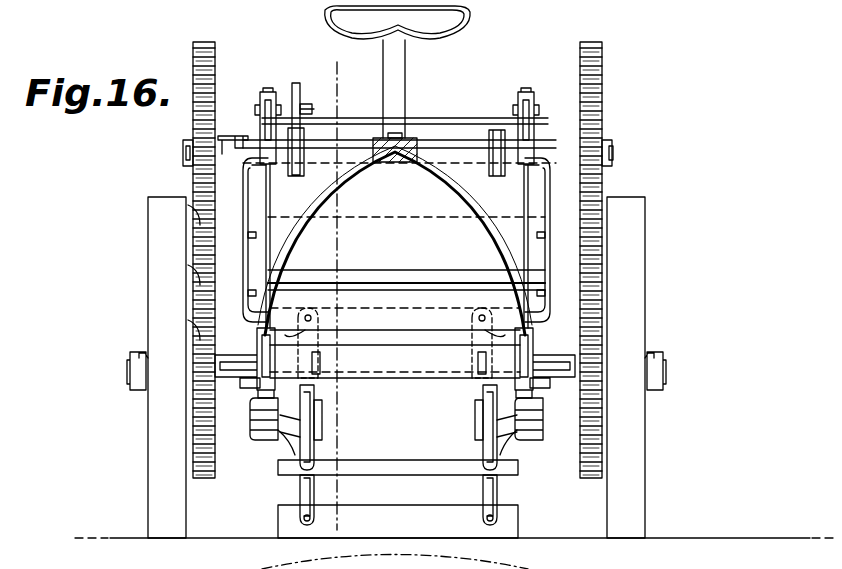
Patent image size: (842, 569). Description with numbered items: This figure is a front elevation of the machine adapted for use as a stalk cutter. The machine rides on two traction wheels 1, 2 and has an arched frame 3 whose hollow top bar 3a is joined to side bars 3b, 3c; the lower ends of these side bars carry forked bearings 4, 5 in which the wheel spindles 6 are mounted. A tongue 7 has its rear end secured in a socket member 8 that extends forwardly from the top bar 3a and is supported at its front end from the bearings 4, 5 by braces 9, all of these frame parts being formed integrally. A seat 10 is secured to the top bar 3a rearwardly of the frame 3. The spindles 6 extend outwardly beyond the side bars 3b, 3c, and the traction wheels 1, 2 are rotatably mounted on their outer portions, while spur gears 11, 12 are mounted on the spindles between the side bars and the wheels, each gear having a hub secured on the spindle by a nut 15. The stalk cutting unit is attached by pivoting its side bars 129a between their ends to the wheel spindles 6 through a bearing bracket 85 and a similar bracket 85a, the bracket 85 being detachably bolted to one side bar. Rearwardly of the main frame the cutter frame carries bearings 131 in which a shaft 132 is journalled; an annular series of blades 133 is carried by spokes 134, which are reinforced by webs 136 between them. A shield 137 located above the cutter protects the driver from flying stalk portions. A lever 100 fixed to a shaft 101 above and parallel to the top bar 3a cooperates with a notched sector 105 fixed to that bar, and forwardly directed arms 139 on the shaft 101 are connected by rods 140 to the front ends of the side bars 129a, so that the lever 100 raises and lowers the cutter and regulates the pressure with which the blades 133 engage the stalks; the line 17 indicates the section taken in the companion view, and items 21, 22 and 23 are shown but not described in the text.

The traction wheel 1 is at (158, 463).
The traction wheel 2 is at (630, 450).
The arched frame 3 is at (245, 130).
The top bar 3a is at (455, 144).
The side bar 3b is at (240, 186).
The side bar 3c is at (553, 188).
The forked bearing 4 is at (285, 340).
The forked bearing 5 is at (505, 340).
The wheel spindle 6 is at (318, 364).
The tongue 7 is at (384, 163).
The socket member 8 is at (400, 163).
The brace 9 is at (296, 232).
The seat 10 is at (455, 25).
The spur gear 11 is at (203, 478).
The spur gear 12 is at (590, 478).
The nut 15 is at (125, 370).
The section line 17 is at (360, 80).
The left gear wheel 21 is at (218, 68).
The right gear wheel 22 is at (592, 69).
The hub nut 23 is at (612, 150).
The bearing bracket 85 is at (250, 363).
The bearing bracket 85a is at (540, 363).
The lever 100 is at (319, 98).
The shaft 101 is at (360, 122).
The notched sector 105 is at (296, 83).
The side bar 129a is at (262, 395).
The bearing 131 is at (280, 465).
The shaft 132 is at (322, 424).
The blade 133 is at (384, 325).
The spoke 134 is at (314, 447).
The web 136 is at (314, 405).
The shield 137 is at (410, 196).
The arm 139 is at (266, 90).
The rod 140 is at (268, 178).